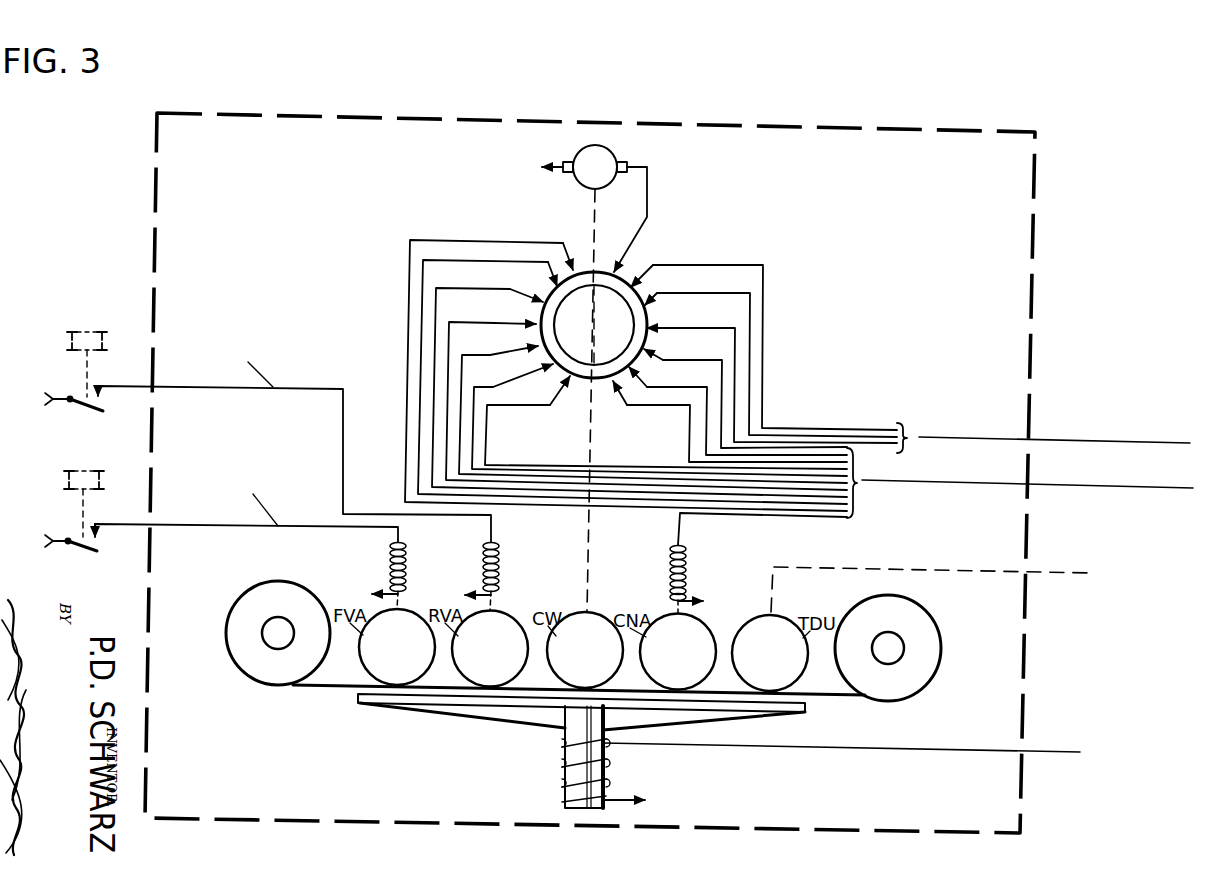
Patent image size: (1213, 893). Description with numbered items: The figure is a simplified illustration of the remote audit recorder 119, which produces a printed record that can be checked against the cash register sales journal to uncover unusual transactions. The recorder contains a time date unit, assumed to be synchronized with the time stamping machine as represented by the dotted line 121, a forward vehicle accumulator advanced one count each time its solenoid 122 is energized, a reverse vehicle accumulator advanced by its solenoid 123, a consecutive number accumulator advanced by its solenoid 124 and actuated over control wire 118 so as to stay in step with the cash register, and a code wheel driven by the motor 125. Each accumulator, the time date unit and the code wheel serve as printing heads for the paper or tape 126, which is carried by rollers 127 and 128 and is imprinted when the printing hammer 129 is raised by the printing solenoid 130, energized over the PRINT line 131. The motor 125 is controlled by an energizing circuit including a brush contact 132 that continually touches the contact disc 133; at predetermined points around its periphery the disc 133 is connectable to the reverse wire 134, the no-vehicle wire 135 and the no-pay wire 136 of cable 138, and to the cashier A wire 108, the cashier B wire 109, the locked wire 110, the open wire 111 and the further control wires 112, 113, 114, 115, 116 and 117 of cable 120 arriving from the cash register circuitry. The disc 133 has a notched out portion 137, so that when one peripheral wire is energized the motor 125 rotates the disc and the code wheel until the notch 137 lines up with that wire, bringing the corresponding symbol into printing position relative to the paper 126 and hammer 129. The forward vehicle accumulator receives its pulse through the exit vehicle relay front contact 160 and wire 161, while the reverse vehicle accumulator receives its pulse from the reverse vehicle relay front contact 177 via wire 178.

The A control wire 108 is at (701, 360).
The B control wire 109 is at (692, 387).
The LOCKED control wire 110 is at (689, 449).
The OPEN control wire 111 is at (491, 451).
The control wire 112 is at (503, 408).
The control wire 113 is at (472, 357).
The control wire 114 is at (462, 318).
The control wire 115 is at (440, 289).
The control wire 116 is at (439, 263).
The control wire 117 is at (439, 242).
The control wire 118 is at (790, 516).
The remote audit recorder 119 is at (1037, 163).
The cable 120 is at (1064, 489).
The dotted line 121 is at (904, 570).
The solenoid 122 is at (405, 556).
The solenoid 123 is at (498, 556).
The solenoid 124 is at (686, 555).
The driving motor 125 is at (612, 153).
The paper or tape 126 is at (873, 698).
The roller 127 is at (255, 592).
The roller 128 is at (927, 612).
The printing hammer 129 is at (510, 724).
The printing solenoid 130 is at (602, 781).
The PRINT line 131 is at (1041, 751).
The brush contact 132 is at (612, 266).
The contact disc 133 is at (620, 189).
The REV control wire 134 is at (763, 331).
The NO VEH control wire 135 is at (750, 377).
The NO PAY control wire 136 is at (735, 417).
The notched out portion 137 is at (611, 325).
The cable 138 is at (1176, 445).
The front contact of relay XVL 160 is at (75, 514).
The wire 161 is at (131, 524).
The front contact of relay RVL 177 is at (76, 374).
The wire 178 is at (105, 387).